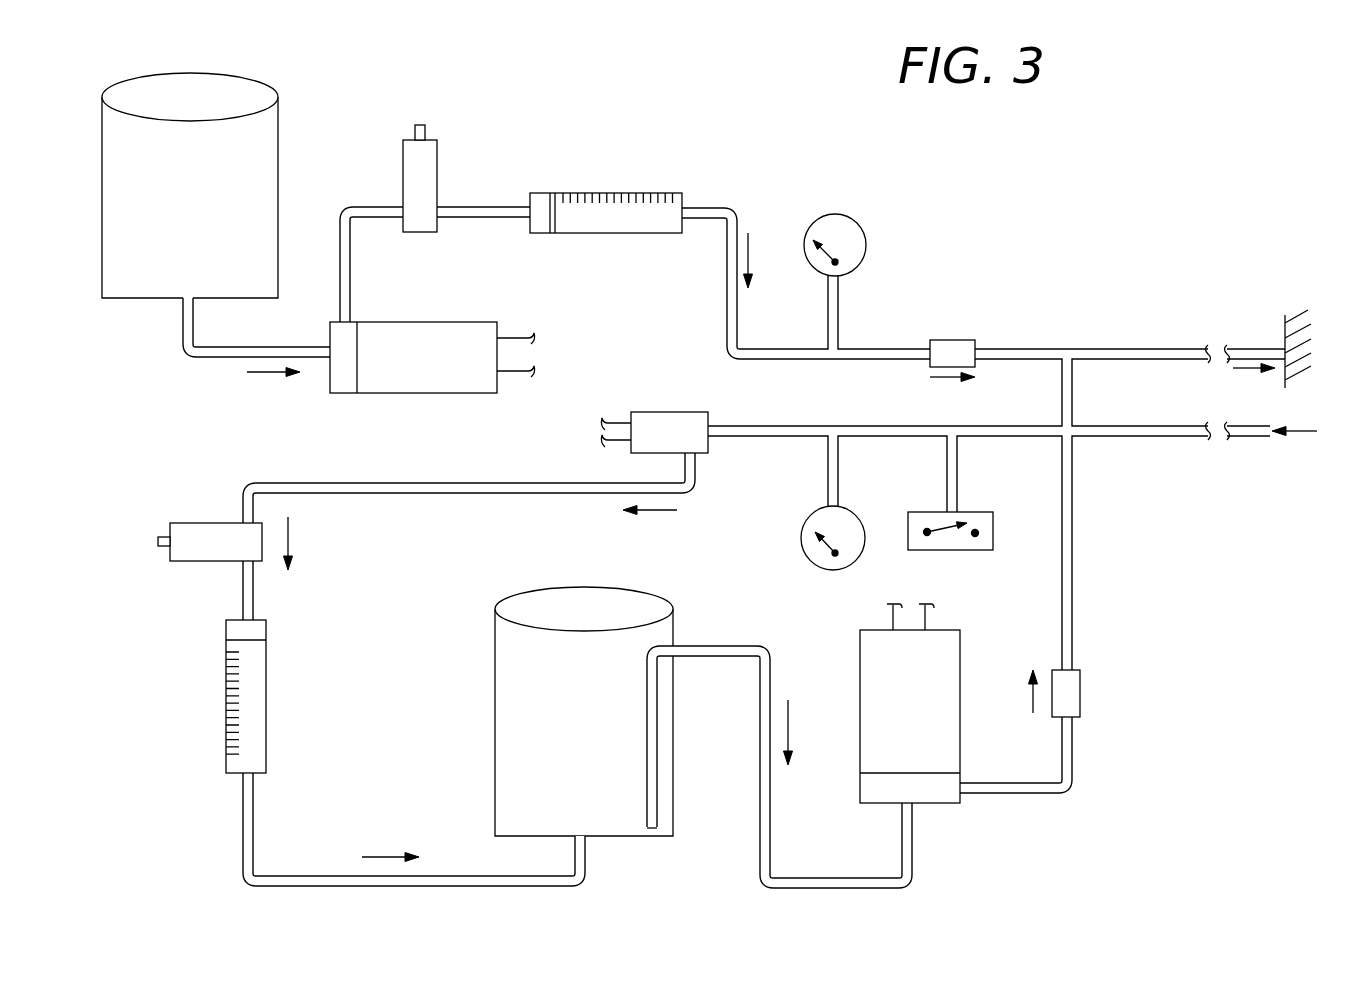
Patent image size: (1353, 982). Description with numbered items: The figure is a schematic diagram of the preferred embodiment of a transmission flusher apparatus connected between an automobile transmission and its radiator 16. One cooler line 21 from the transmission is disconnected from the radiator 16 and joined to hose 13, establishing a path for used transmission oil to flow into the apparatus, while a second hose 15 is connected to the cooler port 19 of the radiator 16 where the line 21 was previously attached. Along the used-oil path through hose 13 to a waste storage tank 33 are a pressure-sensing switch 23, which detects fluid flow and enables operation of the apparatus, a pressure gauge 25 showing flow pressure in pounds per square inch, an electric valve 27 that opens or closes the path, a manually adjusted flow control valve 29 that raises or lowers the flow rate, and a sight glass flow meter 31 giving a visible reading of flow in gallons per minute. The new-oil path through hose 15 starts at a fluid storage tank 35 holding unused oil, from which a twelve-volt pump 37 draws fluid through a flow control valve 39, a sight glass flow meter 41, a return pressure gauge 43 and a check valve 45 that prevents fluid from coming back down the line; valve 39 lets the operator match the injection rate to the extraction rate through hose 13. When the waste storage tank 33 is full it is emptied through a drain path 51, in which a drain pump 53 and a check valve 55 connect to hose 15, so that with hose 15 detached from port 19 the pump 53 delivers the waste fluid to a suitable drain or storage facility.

The hose 13 is at (1125, 436).
The second hose 15 is at (1095, 350).
The radiator 16 is at (1300, 315).
The cooler port 19 is at (1240, 350).
The cooler line 21 is at (1245, 436).
The pressure-sensing switch 23 is at (993, 533).
The pressure gauge 25 is at (802, 554).
The electric valve 27 is at (676, 412).
The flow control valve 29 is at (190, 523).
The sight glass flow meter 31 is at (266, 683).
The waste storage tank 33 is at (578, 587).
The fluid storage tank 35 is at (278, 149).
The 12-volt pump 37 is at (420, 322).
The flow control valve 39 is at (437, 157).
The sight glass flow meter 41 is at (620, 193).
The return pressure gauge 43 is at (843, 214).
The check valve 45 is at (963, 340).
The drain path 51 is at (783, 665).
The drain pump 53 is at (960, 663).
The check valve 55 is at (1080, 688).